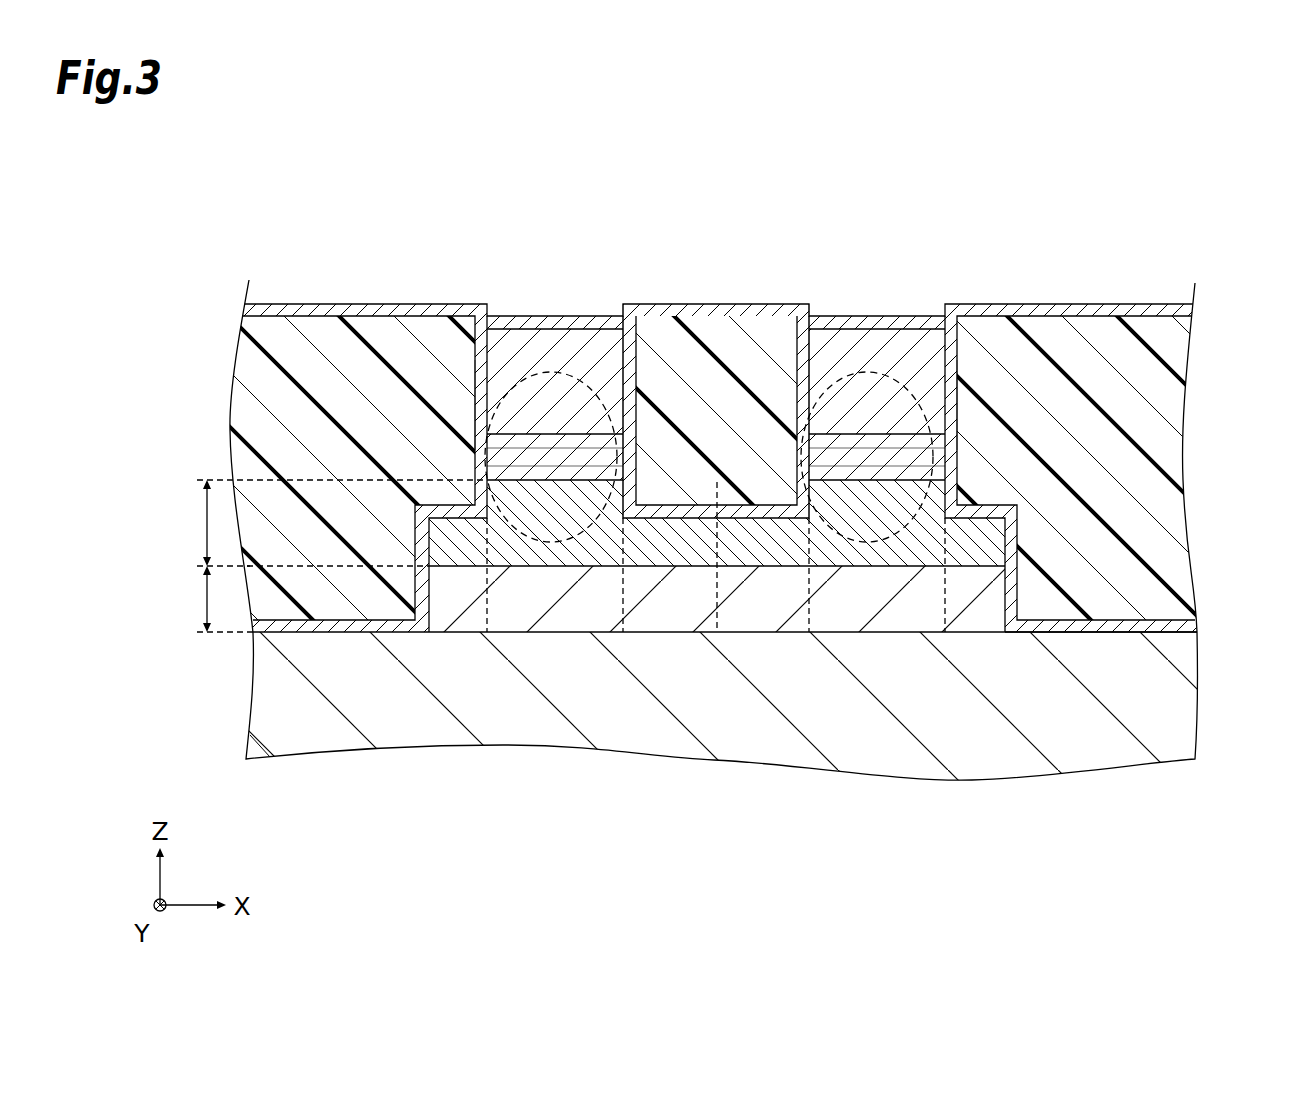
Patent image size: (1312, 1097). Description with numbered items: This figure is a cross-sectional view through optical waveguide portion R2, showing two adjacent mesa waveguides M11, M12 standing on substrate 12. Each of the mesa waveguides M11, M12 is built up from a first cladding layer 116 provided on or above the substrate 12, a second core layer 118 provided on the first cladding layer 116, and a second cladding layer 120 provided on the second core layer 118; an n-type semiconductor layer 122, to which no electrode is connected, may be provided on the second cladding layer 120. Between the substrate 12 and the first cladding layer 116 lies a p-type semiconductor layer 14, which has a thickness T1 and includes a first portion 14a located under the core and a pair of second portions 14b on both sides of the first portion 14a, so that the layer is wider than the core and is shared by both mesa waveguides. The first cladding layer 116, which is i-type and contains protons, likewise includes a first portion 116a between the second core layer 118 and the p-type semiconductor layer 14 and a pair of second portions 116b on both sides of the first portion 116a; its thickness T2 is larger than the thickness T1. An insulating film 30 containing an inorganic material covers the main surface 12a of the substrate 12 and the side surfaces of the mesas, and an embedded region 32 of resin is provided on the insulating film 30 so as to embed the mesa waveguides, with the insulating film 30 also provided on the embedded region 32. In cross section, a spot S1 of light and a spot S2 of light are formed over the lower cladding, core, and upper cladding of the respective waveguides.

The substrate 12 is at (1103, 740).
The main surface 12a is at (1165, 628).
The p-type semiconductor layer 14 is at (647, 824).
The first portion 14a is at (880, 603).
The second portions 14b is at (974, 603).
The insulating film 30 is at (1125, 304).
The embedded region 32 is at (737, 455).
The first cladding layer 116 is at (1290, 358).
The first portion 116a is at (912, 458).
The second portions 116b is at (535, 550).
The second core layer 118 is at (1040, 355).
The second cladding layer 120 is at (898, 345).
The n-type semiconductor layer 122 is at (855, 320).
The mesa waveguide M11 is at (472, 401).
The mesa waveguide M12 is at (963, 408).
The spot of light S1 is at (655, 338).
The spot of light S2 is at (780, 338).
The optical waveguide portion R2 is at (1202, 204).
The thickness T1 is at (207, 600).
The thickness T2 is at (207, 524).